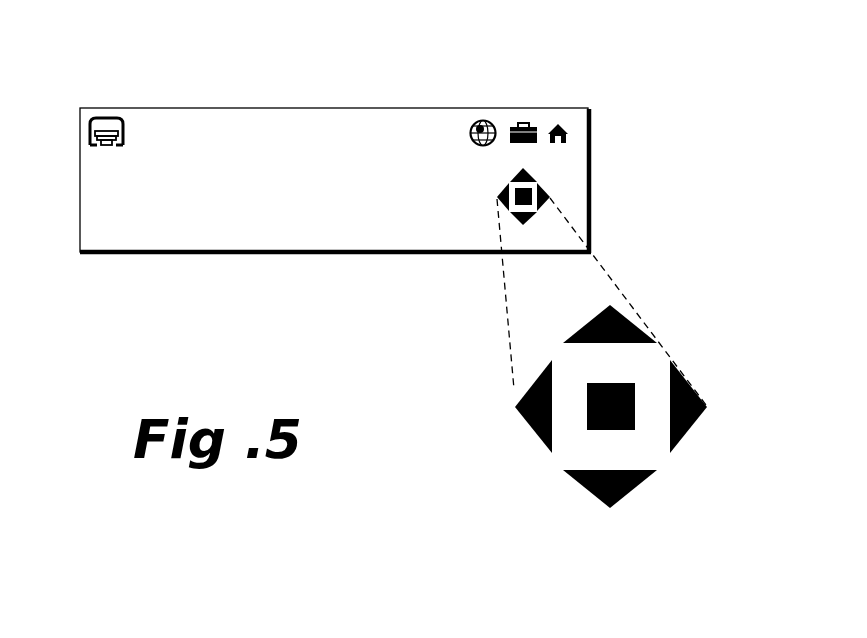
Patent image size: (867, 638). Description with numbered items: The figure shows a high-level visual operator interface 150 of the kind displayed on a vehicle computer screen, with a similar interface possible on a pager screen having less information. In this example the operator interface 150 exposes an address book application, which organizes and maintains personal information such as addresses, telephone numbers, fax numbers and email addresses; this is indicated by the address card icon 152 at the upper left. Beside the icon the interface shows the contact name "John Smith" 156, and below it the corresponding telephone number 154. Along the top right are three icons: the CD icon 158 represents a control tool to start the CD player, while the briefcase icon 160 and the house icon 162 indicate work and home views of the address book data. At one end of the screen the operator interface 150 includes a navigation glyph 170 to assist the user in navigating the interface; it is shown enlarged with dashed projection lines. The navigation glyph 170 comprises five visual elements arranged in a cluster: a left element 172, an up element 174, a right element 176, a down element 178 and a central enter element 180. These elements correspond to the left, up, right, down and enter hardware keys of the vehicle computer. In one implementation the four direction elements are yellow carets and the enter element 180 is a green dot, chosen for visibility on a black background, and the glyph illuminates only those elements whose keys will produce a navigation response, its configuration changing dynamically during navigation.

The operator interface 150 is at (360, 46).
The address card icon 152 is at (118, 116).
The telephone number 154 is at (215, 218).
The John Smith 156 is at (213, 122).
The CD icon 158 is at (480, 120).
The briefcase icon 160 is at (533, 123).
The house icon 162 is at (569, 140).
The navigation glyph 170 is at (612, 343).
The left element 172 is at (515, 407).
The up element 174 is at (603, 315).
The right element 176 is at (695, 422).
The down element 178 is at (583, 488).
The enter element 180 is at (595, 433).